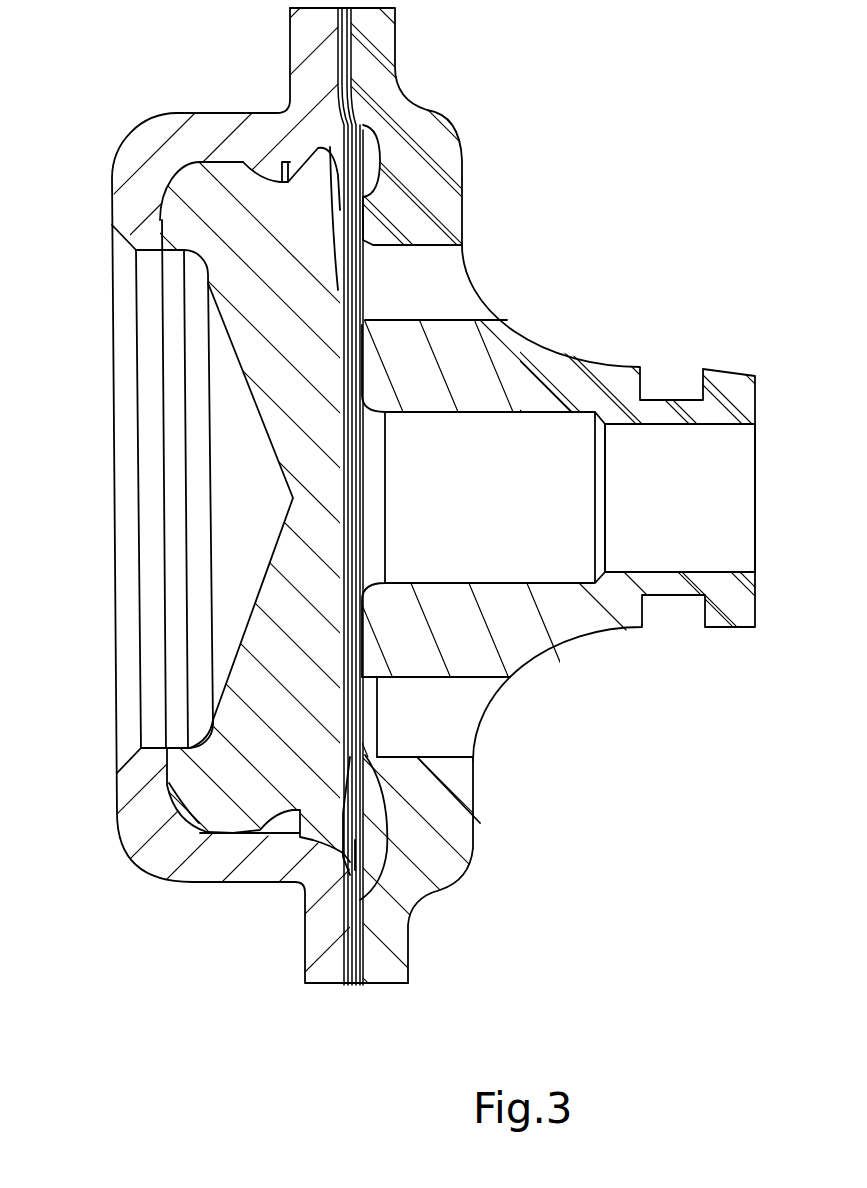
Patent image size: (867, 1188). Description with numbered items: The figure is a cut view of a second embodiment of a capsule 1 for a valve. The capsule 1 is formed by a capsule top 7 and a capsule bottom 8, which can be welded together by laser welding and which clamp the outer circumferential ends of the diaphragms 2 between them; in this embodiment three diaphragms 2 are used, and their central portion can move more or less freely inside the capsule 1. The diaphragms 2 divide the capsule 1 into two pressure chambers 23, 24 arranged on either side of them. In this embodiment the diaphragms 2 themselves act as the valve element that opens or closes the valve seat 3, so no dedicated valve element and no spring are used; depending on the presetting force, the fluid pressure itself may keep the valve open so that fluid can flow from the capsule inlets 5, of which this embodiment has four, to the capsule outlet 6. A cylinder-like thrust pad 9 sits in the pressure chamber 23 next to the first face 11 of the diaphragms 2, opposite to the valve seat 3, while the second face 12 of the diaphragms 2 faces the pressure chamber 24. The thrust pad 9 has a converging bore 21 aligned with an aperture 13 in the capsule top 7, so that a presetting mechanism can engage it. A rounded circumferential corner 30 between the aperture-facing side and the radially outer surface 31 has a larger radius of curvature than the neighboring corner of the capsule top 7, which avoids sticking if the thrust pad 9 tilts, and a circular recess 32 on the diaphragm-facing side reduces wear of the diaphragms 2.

The capsule 1 is at (107, 942).
The diaphragm 2 is at (350, 960).
The valve seat 3 is at (362, 630).
The capsule inlet 5 is at (450, 733).
The capsule outlet 6 is at (672, 467).
The capsule top 7 is at (173, 855).
The capsule bottom 8 is at (428, 857).
The thrust pad 9 is at (203, 200).
The first face 11 is at (352, 755).
The second face 12 is at (455, 795).
The aperture 13 is at (152, 368).
The converging bore 21 is at (228, 342).
The pressure chamber 23 is at (251, 166).
The pressure chamber 24 is at (372, 157).
The rounded circumferential corner 30 is at (189, 827).
The radially outer surface 31 is at (268, 185).
The circular recess 32 is at (352, 830).